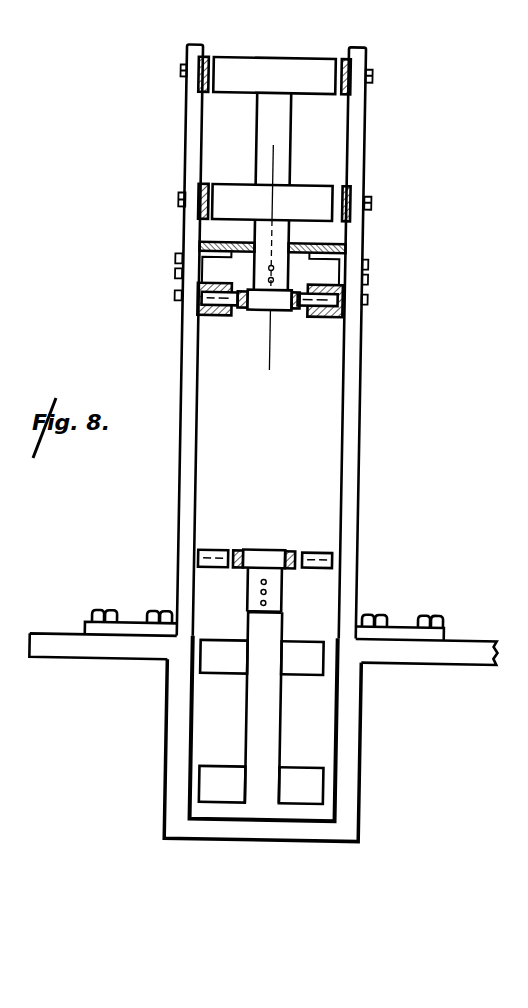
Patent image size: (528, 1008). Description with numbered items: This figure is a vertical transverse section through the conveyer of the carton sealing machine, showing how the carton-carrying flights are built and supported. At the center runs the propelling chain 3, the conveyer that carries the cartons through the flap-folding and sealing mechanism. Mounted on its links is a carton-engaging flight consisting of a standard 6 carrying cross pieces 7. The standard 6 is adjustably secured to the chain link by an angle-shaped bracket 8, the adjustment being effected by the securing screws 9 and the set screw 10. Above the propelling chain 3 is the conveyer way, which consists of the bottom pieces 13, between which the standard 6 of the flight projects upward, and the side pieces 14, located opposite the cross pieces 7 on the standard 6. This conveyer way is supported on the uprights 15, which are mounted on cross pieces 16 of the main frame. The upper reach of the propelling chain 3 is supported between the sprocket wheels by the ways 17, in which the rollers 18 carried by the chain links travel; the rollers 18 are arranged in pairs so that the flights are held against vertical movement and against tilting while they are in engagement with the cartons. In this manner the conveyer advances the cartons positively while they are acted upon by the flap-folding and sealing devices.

The propelling chain 3 is at (265, 550).
The standard 6 is at (280, 125).
The cross pieces 7 is at (237, 85).
The angle-shaped brackets 8 is at (250, 306).
The securing screws 9 is at (273, 149).
The set screw 10 is at (263, 606).
The bottom pieces 13 is at (211, 244).
The side pieces 14 is at (194, 82).
The uprights 15 is at (348, 481).
The cross pieces 16 is at (480, 641).
The ways 17 is at (197, 287).
The rollers 18 is at (200, 302).